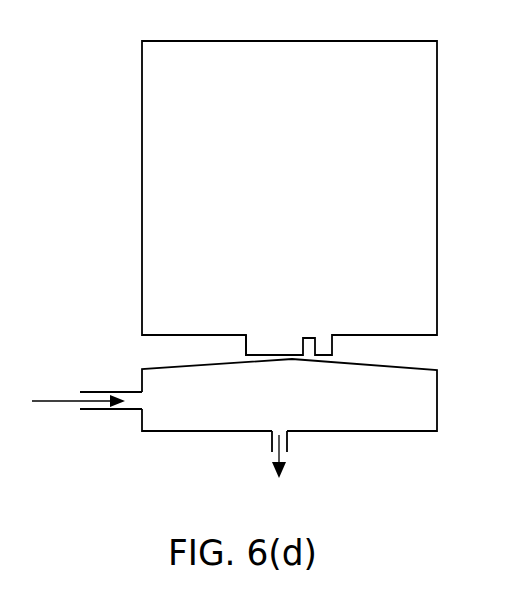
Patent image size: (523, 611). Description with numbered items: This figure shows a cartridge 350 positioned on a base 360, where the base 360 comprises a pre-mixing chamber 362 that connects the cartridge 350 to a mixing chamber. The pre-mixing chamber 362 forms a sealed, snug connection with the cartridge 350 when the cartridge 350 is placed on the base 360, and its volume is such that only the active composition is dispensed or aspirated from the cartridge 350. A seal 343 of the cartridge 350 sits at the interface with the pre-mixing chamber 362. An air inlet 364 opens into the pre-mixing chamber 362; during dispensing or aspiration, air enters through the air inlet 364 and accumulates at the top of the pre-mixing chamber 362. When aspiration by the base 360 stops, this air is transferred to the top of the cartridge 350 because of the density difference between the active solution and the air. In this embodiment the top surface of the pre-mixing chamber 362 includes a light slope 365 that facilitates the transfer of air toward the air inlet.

The cartridge 350 is at (142, 98).
The seal 343 is at (247, 357).
The light slope 365 is at (287, 361).
The base 360 is at (220, 450).
The pre-mixing chamber 362 is at (170, 418).
The air inlet 364 is at (103, 399).